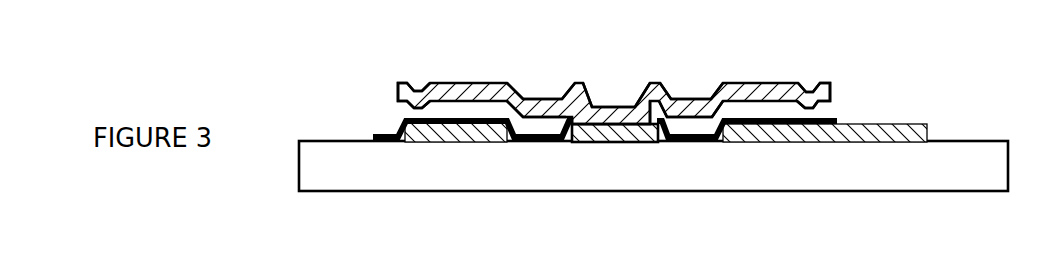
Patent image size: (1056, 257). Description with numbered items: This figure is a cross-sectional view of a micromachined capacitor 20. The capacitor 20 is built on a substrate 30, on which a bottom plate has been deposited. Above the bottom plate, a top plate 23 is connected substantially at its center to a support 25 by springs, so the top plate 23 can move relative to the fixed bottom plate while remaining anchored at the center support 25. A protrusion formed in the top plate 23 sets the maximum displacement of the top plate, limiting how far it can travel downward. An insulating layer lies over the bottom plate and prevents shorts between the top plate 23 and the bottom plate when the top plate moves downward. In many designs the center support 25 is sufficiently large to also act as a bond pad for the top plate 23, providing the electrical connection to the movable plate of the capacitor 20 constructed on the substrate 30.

The micromachined capacitor 20 is at (272, 52).
The top plate 23 is at (778, 82).
The support 25 is at (615, 107).
The substrate 30 is at (305, 173).